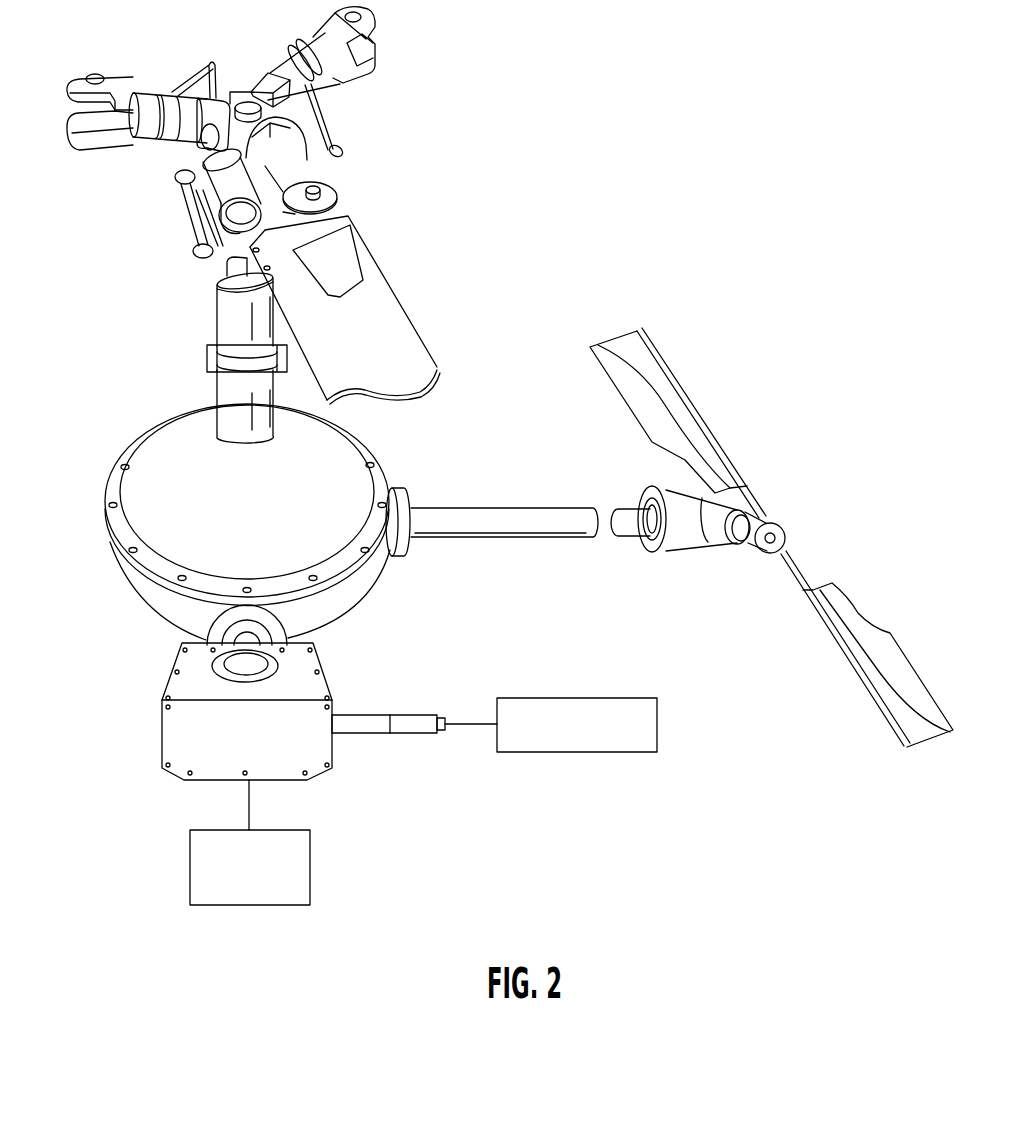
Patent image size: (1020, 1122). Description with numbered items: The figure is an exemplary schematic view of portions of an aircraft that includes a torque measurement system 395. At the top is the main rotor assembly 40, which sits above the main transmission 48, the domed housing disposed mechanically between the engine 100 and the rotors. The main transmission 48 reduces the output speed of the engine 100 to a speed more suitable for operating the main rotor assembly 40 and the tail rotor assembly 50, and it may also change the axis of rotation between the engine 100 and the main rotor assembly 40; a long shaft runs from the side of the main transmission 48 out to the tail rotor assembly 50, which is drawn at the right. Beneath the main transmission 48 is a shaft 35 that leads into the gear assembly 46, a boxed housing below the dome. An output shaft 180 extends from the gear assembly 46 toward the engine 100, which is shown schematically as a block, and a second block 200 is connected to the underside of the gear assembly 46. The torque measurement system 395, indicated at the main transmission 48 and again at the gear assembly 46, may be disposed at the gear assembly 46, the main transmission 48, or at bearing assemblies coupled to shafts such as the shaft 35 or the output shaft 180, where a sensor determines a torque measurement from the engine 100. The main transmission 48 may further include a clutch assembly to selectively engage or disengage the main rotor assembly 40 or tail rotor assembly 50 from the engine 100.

The main rotor assembly 40 is at (355, 172).
The torque measurement system 395 is at (242, 620).
The main transmission 48 is at (345, 604).
The shaft 35 is at (159, 630).
The gear assembly 46 is at (309, 778).
The output shaft 180 is at (407, 713).
The engine 100 is at (597, 741).
The power source 200 is at (268, 882).
The tail rotor assembly 50 is at (772, 508).